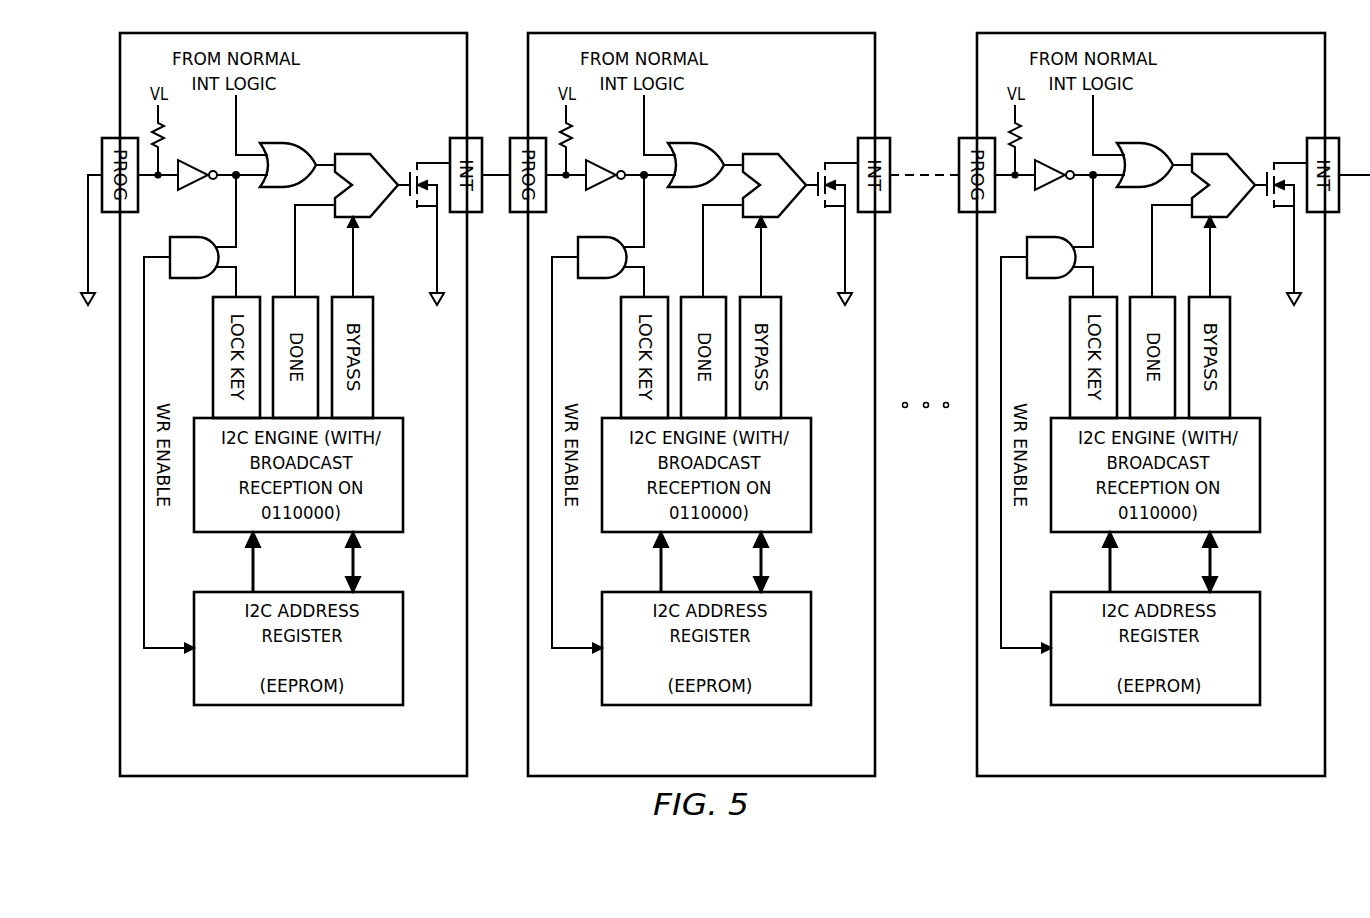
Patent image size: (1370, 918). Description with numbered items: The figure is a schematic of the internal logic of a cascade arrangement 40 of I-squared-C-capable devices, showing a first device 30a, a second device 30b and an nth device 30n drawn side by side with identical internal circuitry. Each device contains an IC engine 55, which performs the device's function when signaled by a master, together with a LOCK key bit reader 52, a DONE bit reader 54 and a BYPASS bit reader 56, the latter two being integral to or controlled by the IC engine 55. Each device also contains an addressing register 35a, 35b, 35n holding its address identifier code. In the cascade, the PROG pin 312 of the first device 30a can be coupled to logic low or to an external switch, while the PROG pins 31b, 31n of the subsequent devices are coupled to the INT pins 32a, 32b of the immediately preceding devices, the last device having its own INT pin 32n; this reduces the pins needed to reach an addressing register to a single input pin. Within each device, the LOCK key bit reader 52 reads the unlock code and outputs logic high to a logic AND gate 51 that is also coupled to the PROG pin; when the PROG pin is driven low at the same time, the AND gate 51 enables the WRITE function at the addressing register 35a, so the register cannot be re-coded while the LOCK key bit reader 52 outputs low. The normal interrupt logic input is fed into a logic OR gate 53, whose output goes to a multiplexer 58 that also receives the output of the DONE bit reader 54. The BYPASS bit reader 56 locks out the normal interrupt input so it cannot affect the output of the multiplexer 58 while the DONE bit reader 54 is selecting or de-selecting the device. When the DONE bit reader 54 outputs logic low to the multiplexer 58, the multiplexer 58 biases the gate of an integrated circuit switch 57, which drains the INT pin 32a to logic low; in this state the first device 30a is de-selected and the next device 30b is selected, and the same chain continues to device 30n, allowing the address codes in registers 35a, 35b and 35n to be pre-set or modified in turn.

The first I²C-capable device 30a is at (242, 781).
The second I²C-capable device 30b is at (598, 781).
The nth I²C-capable device 30n is at (1206, 781).
The PROG terminal of first device 312 is at (106, 137).
The PROG pin 31b is at (513, 138).
The PROG pin 31n is at (960, 138).
The INT pin 32a is at (455, 138).
The INT pin 32b is at (863, 138).
The INT terminal of nth device 32n is at (1340, 138).
The addressing register 35a is at (298, 706).
The addressing register 35b is at (706, 706).
The addressing register 35n is at (1160, 706).
The logic AND gate 51 is at (193, 279).
The LOCK key bit reader 52 is at (248, 297).
The logic OR gate 53 is at (291, 143).
The DONE bit reader 54 is at (305, 297).
The IC engine 55 is at (390, 418).
The BYPASS bit reader 56 is at (366, 297).
The integrated circuit switch 57 is at (402, 199).
The multiplexer 58 is at (351, 153).
The cascade arrangement 40 is at (901, 801).